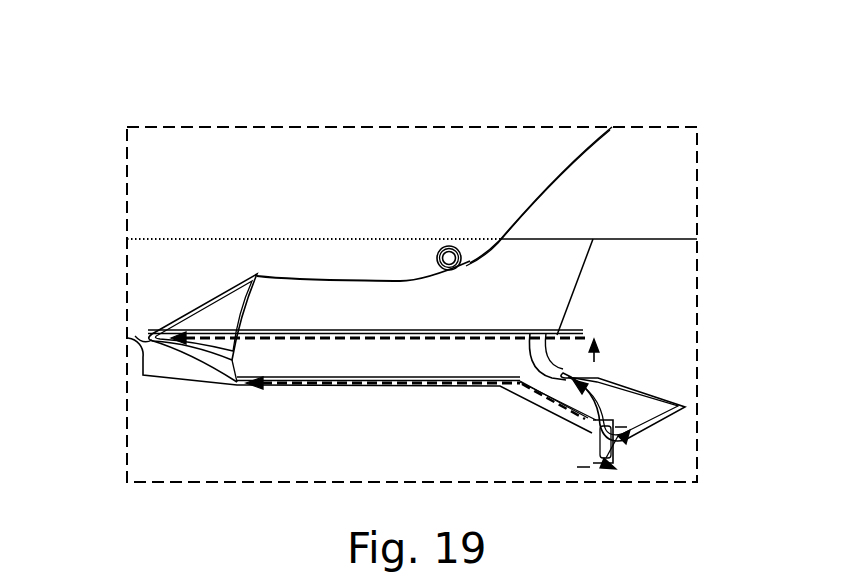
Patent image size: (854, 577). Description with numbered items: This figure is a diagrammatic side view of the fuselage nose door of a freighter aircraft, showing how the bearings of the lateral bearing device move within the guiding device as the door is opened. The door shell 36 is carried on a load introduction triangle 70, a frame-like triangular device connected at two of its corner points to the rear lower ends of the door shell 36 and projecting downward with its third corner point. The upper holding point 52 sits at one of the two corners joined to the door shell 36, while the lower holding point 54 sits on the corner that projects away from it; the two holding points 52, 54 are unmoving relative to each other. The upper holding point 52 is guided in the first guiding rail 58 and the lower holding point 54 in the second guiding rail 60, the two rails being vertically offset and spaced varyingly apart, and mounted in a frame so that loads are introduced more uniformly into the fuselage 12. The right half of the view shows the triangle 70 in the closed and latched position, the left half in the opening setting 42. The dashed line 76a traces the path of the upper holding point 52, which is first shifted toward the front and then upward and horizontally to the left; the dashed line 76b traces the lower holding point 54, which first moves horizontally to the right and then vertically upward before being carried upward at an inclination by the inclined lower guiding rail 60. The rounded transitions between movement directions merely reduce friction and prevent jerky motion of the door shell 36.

The fuselage area 12 is at (548, 254).
The door shell 36 is at (320, 147).
The opening setting 42 is at (578, 140).
The first holding point 52 is at (152, 332).
The second holding point 54 is at (237, 387).
The first guiding rail 58 is at (514, 330).
The second guiding rail 60 is at (398, 388).
The load introduction triangle 70 is at (233, 284).
The dashed line 76a is at (375, 331).
The dashed line 76b is at (300, 390).